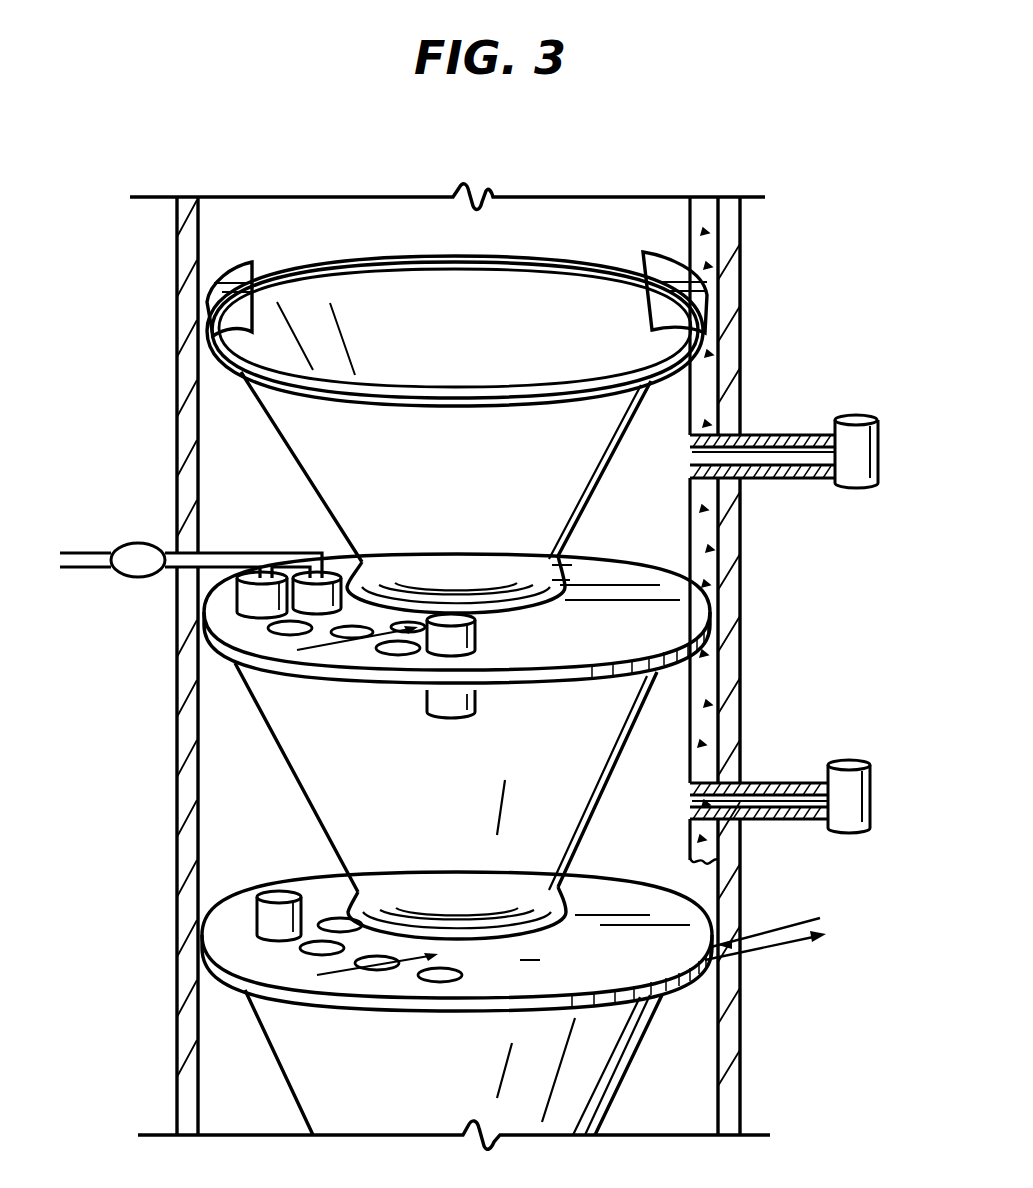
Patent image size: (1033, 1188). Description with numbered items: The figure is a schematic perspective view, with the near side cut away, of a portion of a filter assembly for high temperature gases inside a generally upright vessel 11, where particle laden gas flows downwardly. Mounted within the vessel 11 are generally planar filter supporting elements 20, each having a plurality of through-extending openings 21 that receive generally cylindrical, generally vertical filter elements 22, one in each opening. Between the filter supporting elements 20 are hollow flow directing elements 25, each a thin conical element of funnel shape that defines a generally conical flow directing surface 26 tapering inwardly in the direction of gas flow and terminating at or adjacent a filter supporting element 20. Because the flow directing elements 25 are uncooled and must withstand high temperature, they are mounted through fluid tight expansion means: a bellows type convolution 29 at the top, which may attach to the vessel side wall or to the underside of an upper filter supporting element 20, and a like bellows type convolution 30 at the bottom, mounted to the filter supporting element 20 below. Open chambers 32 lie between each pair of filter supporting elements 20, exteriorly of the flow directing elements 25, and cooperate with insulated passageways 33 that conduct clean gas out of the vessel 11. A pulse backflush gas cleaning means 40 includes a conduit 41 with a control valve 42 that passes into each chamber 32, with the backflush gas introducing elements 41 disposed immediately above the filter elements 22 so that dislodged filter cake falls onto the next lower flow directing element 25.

The vessel 11 is at (168, 801).
The filter supporting element 20 is at (552, 628).
The through-extending openings 21 is at (357, 640).
The filter element 22 is at (253, 605).
The flow directing element 25 is at (285, 415).
The flow directing surface 26 is at (376, 316).
The bellows type convolution 29 is at (508, 262).
The bellows type convolution 30 is at (565, 562).
The open chamber 32 is at (667, 720).
The insulated passageway 33 is at (777, 436).
The pulse backflush gas cleaning means 40 is at (127, 590).
The conduit 41 is at (222, 552).
The control valve 42 is at (135, 542).